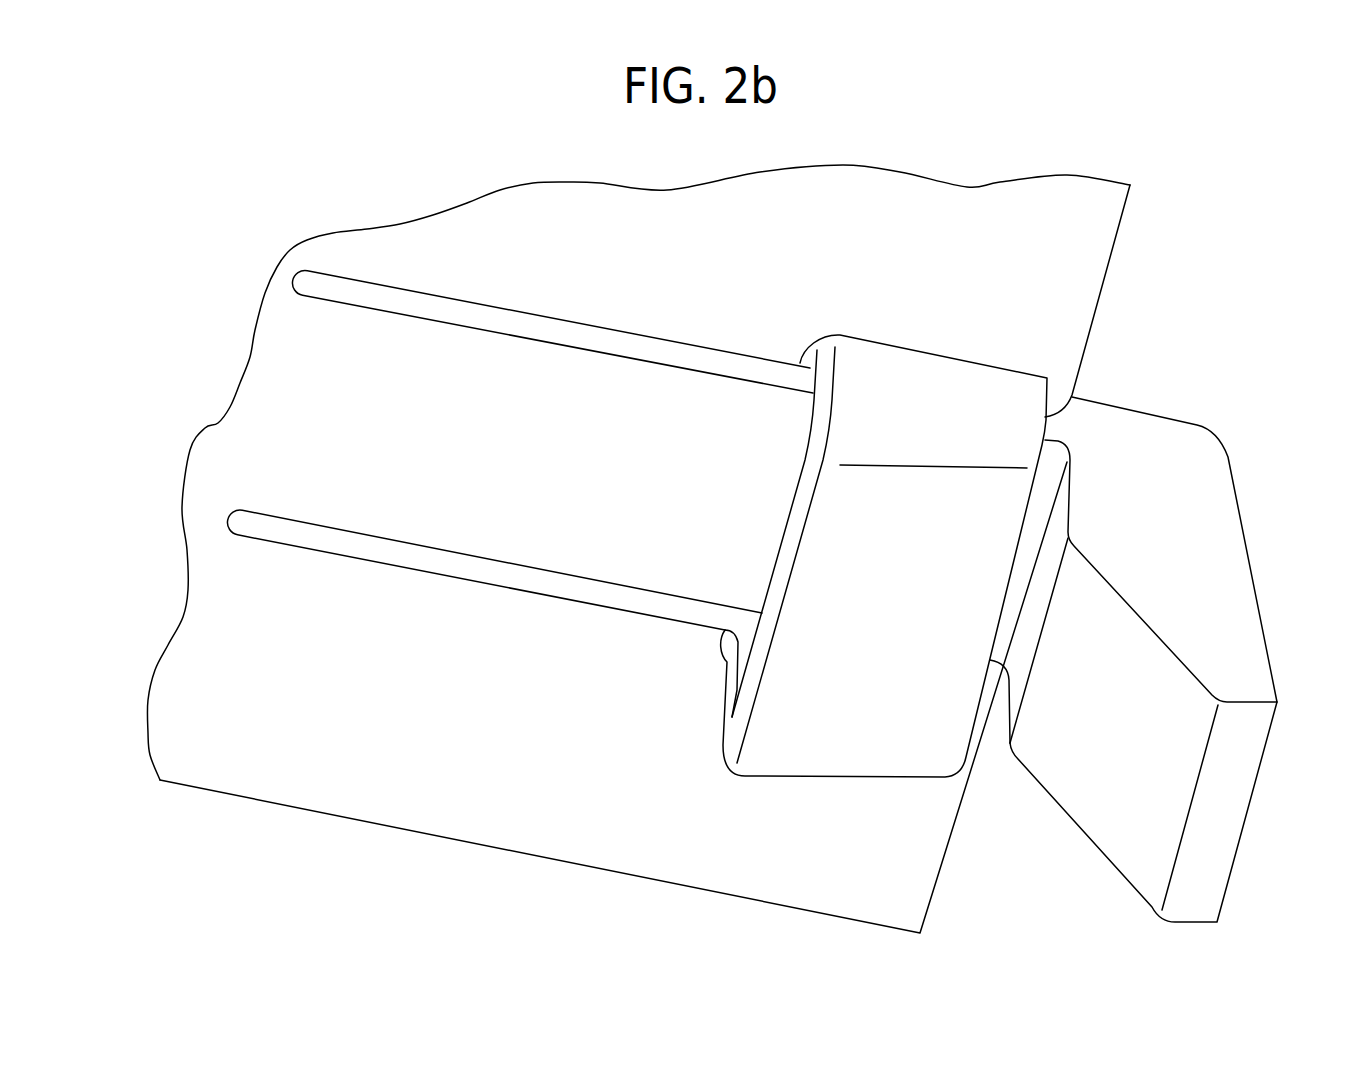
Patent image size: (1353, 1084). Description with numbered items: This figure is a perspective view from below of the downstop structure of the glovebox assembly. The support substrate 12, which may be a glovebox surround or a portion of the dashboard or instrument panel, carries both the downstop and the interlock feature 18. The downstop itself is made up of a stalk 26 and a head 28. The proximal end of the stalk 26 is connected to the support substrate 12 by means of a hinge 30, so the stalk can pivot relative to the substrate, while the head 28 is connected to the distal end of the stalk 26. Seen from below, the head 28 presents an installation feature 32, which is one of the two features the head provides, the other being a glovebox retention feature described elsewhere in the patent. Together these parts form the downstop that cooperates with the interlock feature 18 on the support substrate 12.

The support substrate 12 is at (442, 798).
The interlock feature 18 is at (905, 620).
The stalk 26 is at (663, 493).
The head 28 is at (1195, 562).
The hinge 30 is at (283, 400).
The installation feature 32 is at (1110, 802).